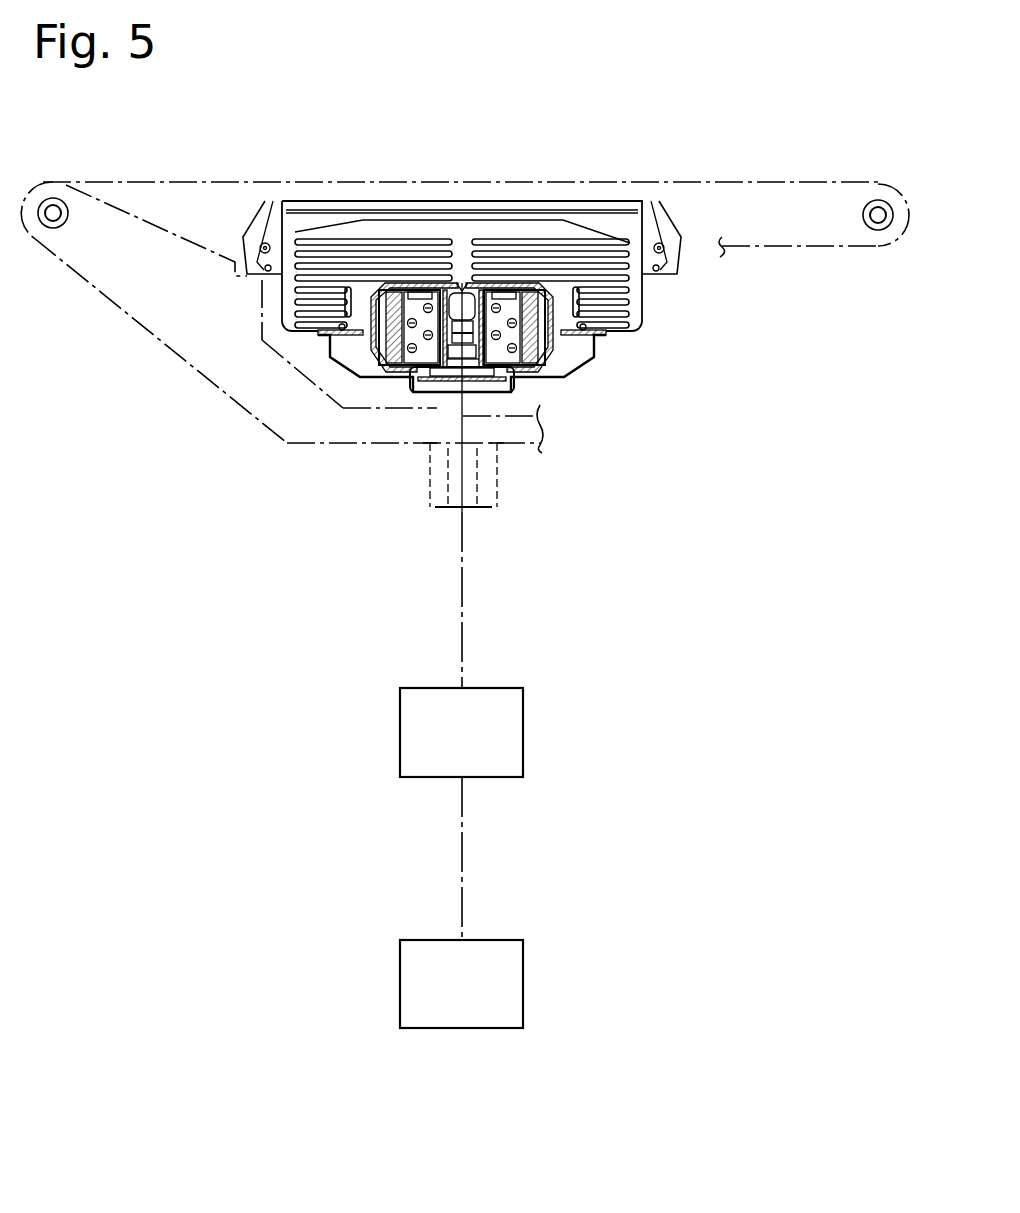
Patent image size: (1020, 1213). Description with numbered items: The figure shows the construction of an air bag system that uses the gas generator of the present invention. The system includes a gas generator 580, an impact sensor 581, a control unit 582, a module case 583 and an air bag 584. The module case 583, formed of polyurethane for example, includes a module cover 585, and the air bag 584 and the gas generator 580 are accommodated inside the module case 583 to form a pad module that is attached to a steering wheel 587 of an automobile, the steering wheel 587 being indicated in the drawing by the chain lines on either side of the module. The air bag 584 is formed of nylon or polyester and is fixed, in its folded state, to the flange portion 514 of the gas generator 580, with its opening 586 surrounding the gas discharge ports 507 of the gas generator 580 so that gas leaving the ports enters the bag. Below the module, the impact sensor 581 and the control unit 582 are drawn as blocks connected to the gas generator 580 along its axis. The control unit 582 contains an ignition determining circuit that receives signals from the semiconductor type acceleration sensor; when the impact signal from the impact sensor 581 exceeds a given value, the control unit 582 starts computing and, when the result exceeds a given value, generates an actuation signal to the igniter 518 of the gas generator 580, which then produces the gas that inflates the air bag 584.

The gas discharge ports 507 is at (370, 307).
The flange portion 514 is at (598, 338).
The igniter 518 is at (445, 385).
The gas generator 580 is at (338, 371).
The impact sensor 581 is at (400, 978).
The control unit 582 is at (400, 717).
The module case 583 is at (592, 180).
The air bag 584 is at (318, 233).
The module cover 585 is at (460, 200).
The opening 586 is at (620, 303).
The steering wheel 587 is at (742, 178).